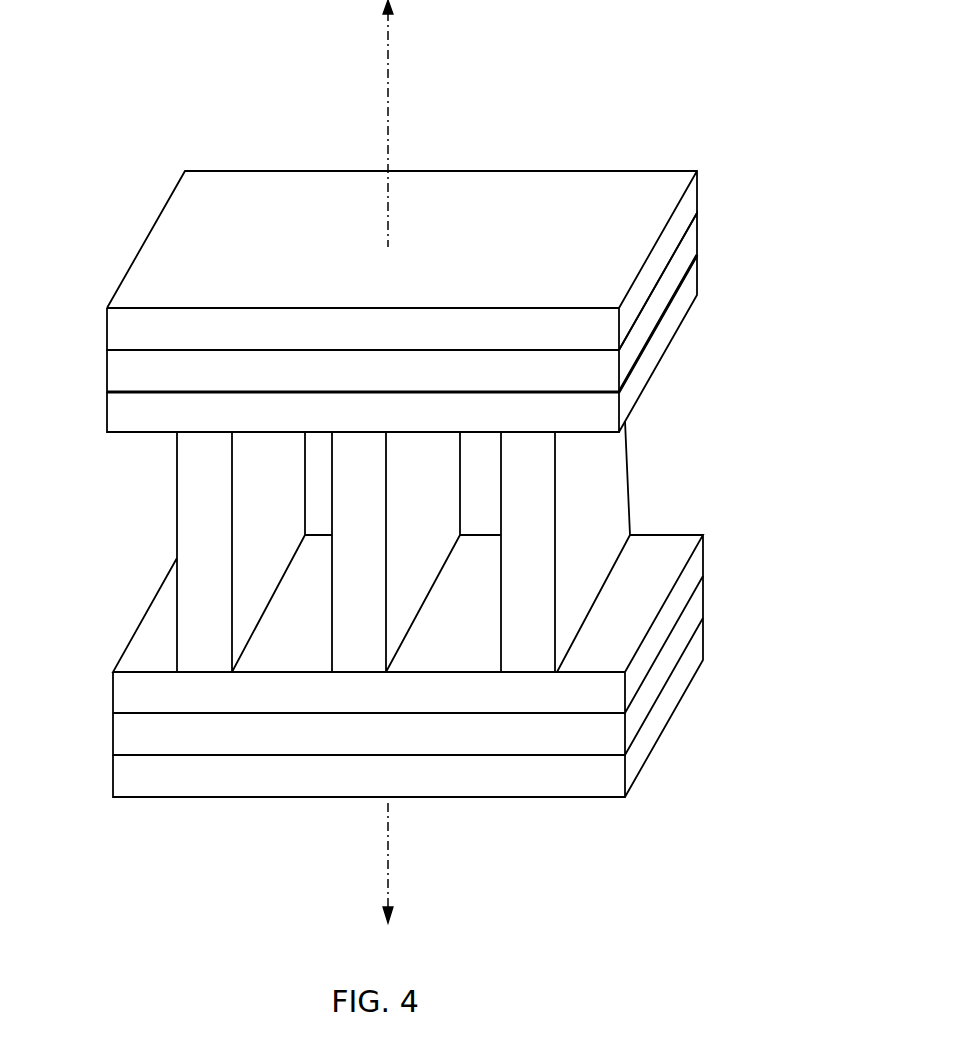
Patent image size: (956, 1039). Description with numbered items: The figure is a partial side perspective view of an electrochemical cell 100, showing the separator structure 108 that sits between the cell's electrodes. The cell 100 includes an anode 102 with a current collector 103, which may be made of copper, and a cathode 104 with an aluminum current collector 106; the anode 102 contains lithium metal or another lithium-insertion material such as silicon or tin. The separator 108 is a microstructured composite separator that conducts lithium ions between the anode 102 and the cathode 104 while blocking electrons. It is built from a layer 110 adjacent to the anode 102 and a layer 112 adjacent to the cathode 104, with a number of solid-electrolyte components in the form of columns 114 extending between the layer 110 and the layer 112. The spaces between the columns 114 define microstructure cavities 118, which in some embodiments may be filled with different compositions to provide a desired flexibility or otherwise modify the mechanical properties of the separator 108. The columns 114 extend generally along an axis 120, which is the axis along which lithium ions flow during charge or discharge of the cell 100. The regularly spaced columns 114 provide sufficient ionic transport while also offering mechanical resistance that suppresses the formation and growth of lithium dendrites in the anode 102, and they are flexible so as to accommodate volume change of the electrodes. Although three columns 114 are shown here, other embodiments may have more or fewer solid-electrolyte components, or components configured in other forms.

The electrochemical cell 100 is at (738, 191).
The anode 102 is at (633, 732).
The current collector 103 is at (625, 797).
The cathode 104 is at (112, 372).
The aluminum current collector 106 is at (143, 240).
The separator structure 108 is at (773, 573).
The layer 110 is at (113, 672).
The layer 112 is at (108, 430).
The columns 114 is at (178, 515).
The microstructure cavities 118 is at (233, 600).
The axis 120 is at (388, 62).